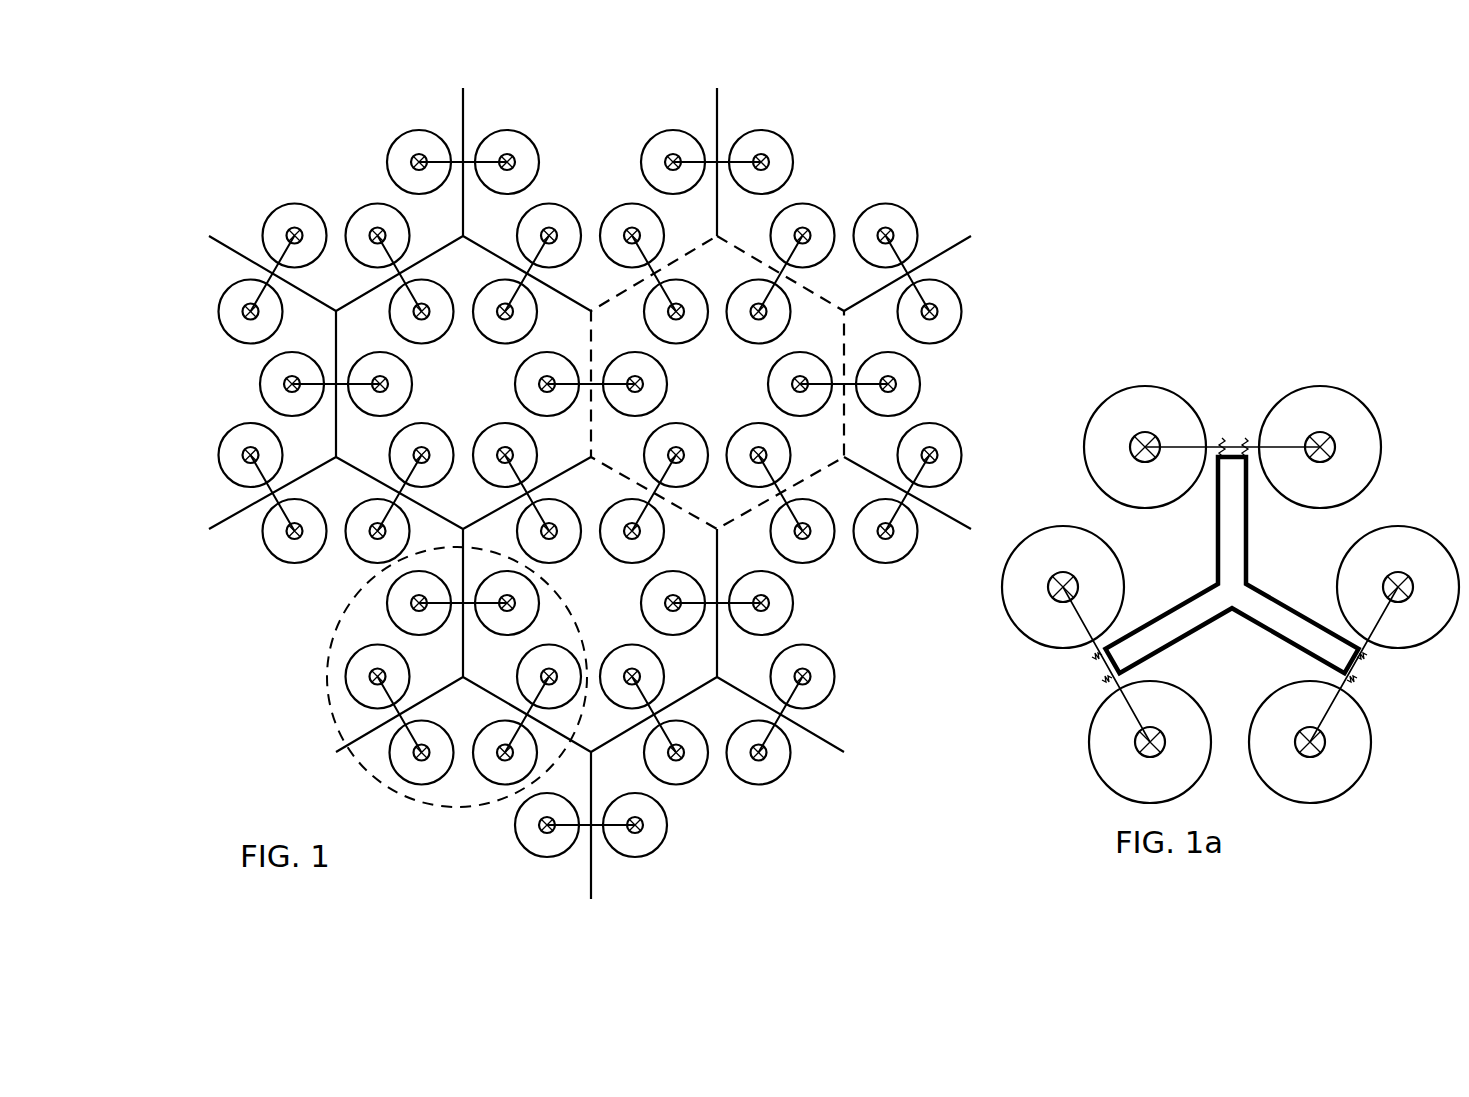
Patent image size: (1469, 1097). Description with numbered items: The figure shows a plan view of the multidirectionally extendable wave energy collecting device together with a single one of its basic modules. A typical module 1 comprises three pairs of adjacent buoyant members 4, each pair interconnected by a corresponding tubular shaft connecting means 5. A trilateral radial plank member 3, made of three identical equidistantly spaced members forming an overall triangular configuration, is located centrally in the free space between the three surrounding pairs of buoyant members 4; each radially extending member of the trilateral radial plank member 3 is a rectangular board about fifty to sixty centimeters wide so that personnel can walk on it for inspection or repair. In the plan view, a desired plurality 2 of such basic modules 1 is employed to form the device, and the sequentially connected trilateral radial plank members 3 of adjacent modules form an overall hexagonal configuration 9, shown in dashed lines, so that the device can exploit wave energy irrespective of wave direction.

In FIG. 1, the module 1 is at (317, 658).
In FIG. 1A, the module 1 is at (1208, 352).
In FIG. 1, the plurality of modules 2 is at (577, 98).
In FIG. 1, the trilateral radial plank member 3 is at (732, 225).
In FIG. 1A, the trilateral radial plank member 3 is at (1285, 590).
In FIG. 1, the buoyant members 4 is at (220, 445).
In FIG. 1A, the buoyant members 4 is at (1437, 640).
In FIG. 1, the tubular shaft connecting means 5 is at (267, 258).
In FIG. 1A, the tubular shaft connecting means 5 is at (1083, 657).
In FIG. 1, the hexagonal configuration 9 is at (827, 283).